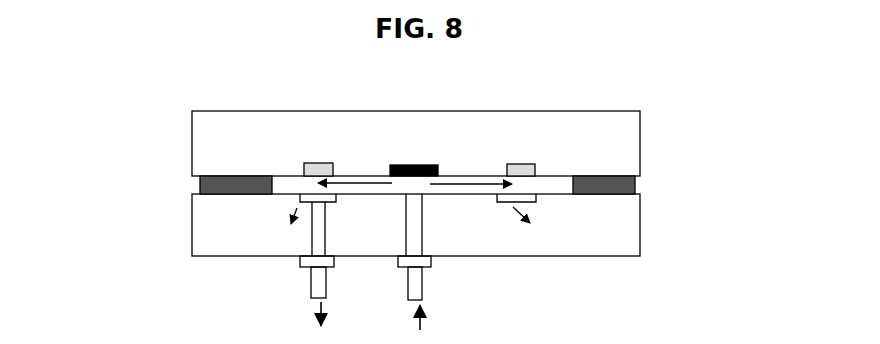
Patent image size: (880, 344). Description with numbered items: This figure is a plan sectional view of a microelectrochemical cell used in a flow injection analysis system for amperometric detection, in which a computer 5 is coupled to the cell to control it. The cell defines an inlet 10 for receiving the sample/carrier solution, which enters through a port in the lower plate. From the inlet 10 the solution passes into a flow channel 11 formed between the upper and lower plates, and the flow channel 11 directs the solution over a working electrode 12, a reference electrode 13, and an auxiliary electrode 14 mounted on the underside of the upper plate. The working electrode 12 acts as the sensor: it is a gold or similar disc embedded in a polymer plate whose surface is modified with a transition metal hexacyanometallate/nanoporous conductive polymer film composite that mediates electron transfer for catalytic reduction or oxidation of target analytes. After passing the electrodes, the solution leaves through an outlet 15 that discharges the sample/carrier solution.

The computer 5 is at (659, 146).
The inlet 10 is at (419, 285).
The flow channel 11 is at (398, 187).
The working electrode 12 is at (414, 165).
The reference electrode 13 is at (523, 164).
The auxiliary electrode 14 is at (317, 163).
The outlet 15 is at (313, 283).